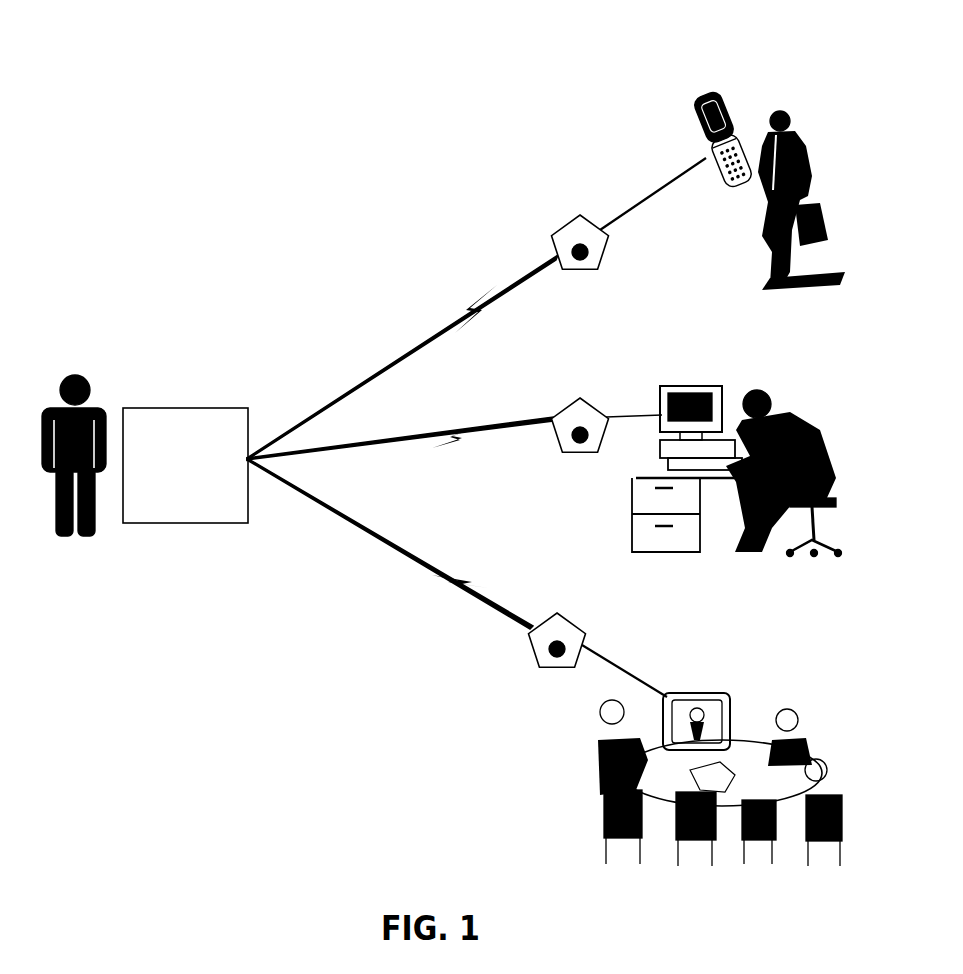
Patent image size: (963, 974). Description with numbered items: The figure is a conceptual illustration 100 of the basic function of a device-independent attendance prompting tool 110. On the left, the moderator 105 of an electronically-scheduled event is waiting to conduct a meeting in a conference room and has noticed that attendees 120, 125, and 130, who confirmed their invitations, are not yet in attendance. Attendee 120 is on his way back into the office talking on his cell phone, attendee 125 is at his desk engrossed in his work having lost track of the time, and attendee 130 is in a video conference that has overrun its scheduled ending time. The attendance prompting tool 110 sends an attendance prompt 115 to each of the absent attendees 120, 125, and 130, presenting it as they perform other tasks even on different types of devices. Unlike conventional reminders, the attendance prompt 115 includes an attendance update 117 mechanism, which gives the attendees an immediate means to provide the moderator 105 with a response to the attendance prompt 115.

The conceptual illustration 100 is at (88, 38).
The moderator 105 is at (74, 482).
The attendance prompting tool 110 is at (185, 465).
The attendance prompt 115 is at (490, 233).
The attendance update 117 is at (580, 260).
The attendee 120 is at (778, 190).
The attendee 125 is at (745, 468).
The attendee 130 is at (728, 772).